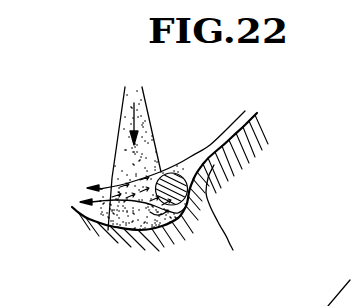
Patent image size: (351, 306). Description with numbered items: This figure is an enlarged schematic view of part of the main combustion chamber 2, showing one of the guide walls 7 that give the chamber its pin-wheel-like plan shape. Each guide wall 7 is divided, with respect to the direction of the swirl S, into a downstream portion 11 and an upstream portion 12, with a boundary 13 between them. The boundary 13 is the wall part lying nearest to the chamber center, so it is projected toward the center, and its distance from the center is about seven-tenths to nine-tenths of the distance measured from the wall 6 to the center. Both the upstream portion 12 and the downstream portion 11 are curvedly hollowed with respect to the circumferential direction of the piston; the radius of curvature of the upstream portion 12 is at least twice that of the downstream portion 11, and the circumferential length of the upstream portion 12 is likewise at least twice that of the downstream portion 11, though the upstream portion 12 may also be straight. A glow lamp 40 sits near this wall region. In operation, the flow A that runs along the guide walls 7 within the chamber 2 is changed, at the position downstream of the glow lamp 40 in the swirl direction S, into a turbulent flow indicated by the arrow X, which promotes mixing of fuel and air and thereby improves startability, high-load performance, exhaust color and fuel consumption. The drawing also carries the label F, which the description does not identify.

The main combustion chamber 2 is at (192, 110).
The spray force F is at (134, 113).
The flow A is at (166, 157).
The turbulent flow X is at (108, 230).
The wall 6 is at (146, 250).
The glow lamp 40 is at (194, 215).
The downstream portion 11 is at (229, 207).
The boundary 13 is at (230, 203).
The upstream portion 12 is at (231, 169).
The guide wall 7 is at (279, 176).
The direction of the swirl S is at (308, 118).